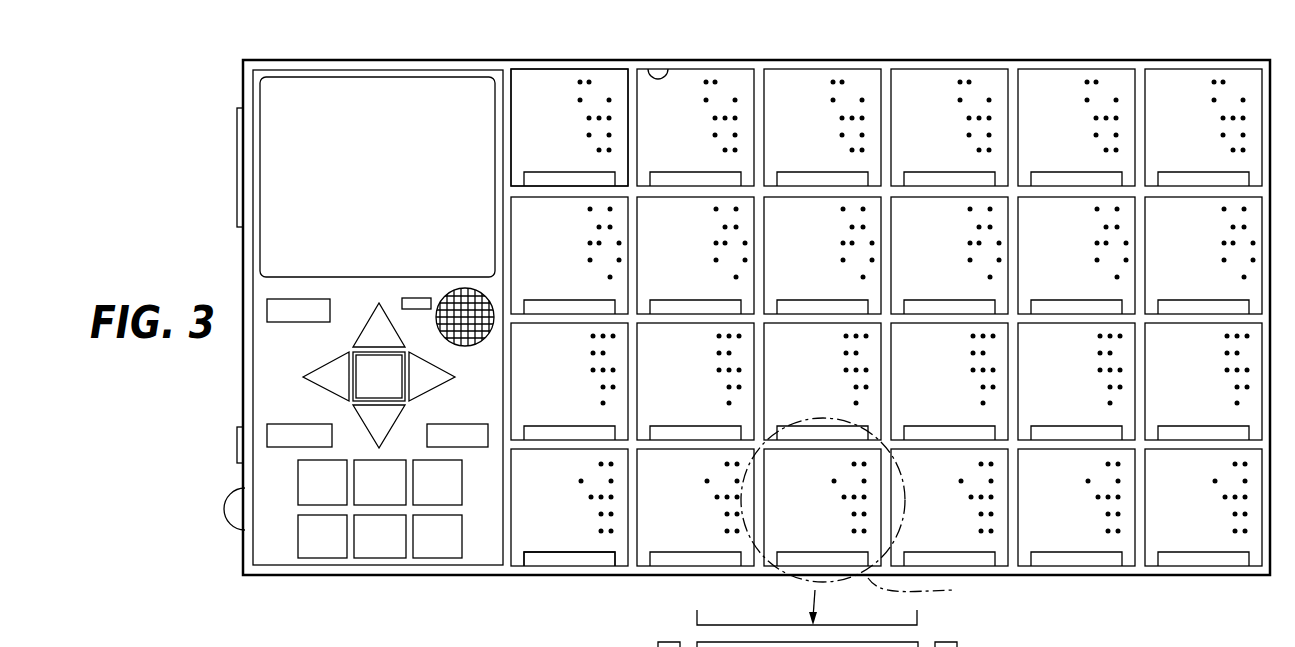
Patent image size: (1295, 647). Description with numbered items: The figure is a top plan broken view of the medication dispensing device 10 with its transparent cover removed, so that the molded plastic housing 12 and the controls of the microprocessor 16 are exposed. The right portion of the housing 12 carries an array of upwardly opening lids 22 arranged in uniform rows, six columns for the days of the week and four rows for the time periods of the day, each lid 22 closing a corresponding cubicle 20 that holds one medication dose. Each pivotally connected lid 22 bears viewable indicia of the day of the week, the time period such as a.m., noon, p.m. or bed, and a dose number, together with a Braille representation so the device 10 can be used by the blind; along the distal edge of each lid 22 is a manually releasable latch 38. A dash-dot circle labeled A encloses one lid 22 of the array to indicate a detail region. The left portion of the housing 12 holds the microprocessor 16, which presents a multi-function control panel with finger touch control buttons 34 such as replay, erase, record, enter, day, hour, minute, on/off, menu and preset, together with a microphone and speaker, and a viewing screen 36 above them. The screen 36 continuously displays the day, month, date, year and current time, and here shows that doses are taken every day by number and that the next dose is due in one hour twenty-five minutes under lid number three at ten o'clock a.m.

The medication dispensing device 10 is at (218, 83).
The housing 12 is at (527, 582).
The microprocessor 16 is at (243, 360).
The cubicle 20 is at (658, 72).
The lid 22 is at (534, 87).
The finger touch control buttons 34 is at (298, 537).
The viewing screen 36 is at (292, 129).
The manually releasable latch 38 is at (593, 561).
The detail area A is at (813, 532).